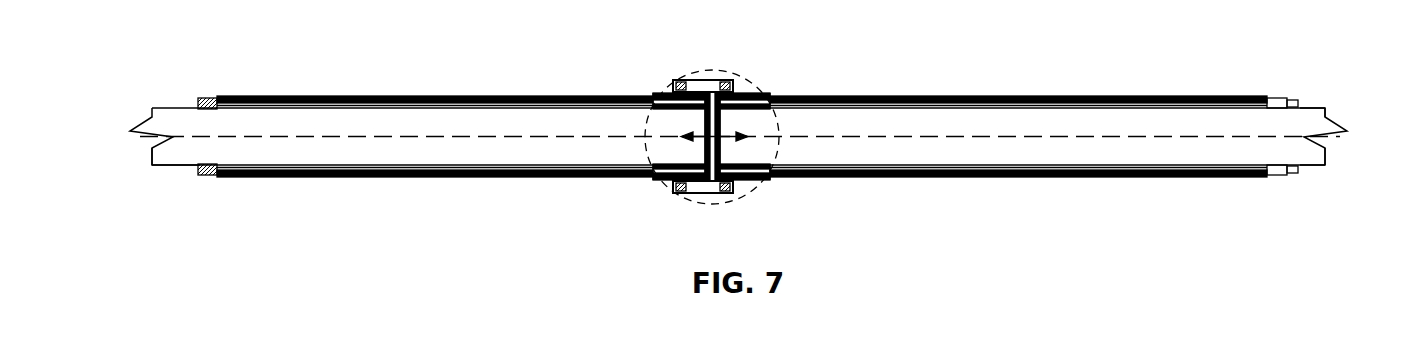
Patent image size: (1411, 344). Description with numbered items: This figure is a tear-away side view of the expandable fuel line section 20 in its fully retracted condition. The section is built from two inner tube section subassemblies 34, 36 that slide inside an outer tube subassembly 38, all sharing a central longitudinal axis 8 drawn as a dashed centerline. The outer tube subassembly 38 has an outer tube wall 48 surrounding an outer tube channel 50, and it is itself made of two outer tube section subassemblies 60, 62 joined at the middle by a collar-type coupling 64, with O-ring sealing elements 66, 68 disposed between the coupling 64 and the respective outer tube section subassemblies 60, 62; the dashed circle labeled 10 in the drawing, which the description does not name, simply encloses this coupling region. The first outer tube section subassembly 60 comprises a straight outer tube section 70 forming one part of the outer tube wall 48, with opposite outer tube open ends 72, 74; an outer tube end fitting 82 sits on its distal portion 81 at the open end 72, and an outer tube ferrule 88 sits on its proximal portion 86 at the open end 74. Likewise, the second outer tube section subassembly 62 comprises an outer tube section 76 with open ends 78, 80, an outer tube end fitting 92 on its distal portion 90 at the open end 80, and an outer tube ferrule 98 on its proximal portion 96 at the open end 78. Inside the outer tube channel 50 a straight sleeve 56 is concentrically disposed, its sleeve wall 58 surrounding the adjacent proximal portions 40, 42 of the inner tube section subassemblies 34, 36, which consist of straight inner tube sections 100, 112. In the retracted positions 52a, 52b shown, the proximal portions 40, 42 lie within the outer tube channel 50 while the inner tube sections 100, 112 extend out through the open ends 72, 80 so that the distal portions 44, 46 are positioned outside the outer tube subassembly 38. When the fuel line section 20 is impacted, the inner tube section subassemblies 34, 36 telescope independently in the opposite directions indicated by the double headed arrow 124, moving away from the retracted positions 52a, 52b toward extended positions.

The central longitudinal axis 8 is at (392, 137).
The coupling assembly 10 is at (722, 79).
The expandable fuel line section 20 is at (871, 68).
The inner tube section subassembly 34 is at (167, 129).
The inner tube section subassembly 36 is at (1305, 155).
The outer tube subassembly 38 is at (217, 98).
The proximal portion 40 is at (528, 146).
The proximal portion 42 is at (792, 148).
The distal portion 44 is at (182, 153).
The distal portion 46 is at (1323, 132).
The outer tube wall 48 is at (437, 96).
The outer tube channel 50 is at (1050, 97).
The retracted position 52a is at (155, 64).
The retracted position 52b is at (1319, 84).
The sleeve 56 is at (1238, 103).
The sleeve wall 58 is at (1207, 104).
The outer tube section subassembly 60 is at (578, 96).
The outer tube section subassembly 62 is at (1097, 97).
The coupling 64 is at (712, 80).
The sealing element 66 is at (680, 84).
The sealing element 68 is at (728, 84).
The outer tube section 70 is at (533, 96).
The outer tube open end 72 is at (208, 177).
The outer tube open end 74 is at (627, 96).
The outer tube section 76 is at (1208, 179).
The outer tube open end 78 is at (858, 177).
The outer tube open end 80 is at (1287, 99).
The distal portion 81 is at (227, 95).
The outer tube end fitting 82 is at (205, 100).
The proximal portion 86 is at (632, 178).
The outer tube ferrule 88 is at (655, 93).
The distal portion 90 is at (1245, 179).
The outer tube end fitting 92 is at (1285, 177).
The proximal portion 96 is at (793, 98).
The outer tube ferrule 98 is at (765, 97).
The inner tube section 100 is at (266, 131).
The inner tube section 112 is at (1082, 152).
The double headed arrow 124 is at (699, 130).